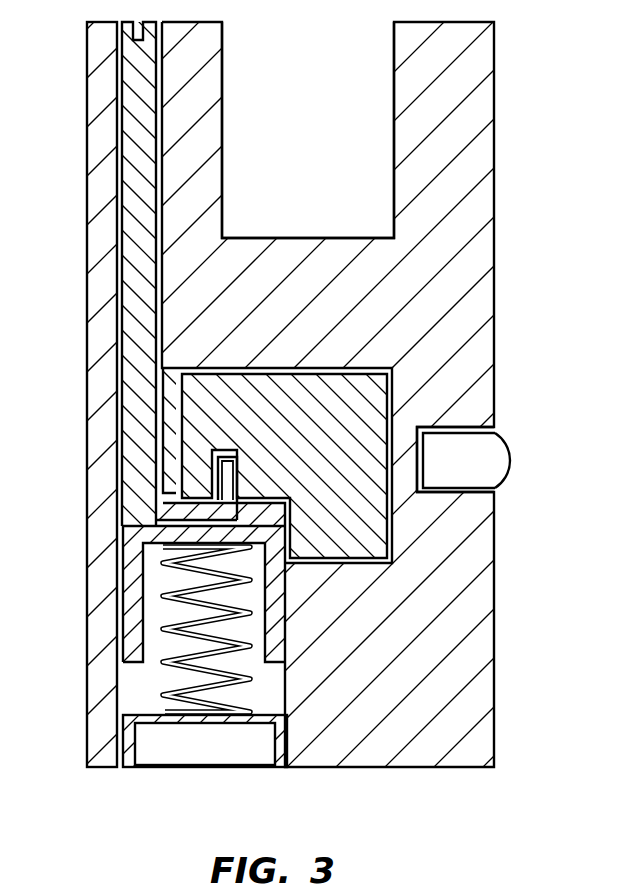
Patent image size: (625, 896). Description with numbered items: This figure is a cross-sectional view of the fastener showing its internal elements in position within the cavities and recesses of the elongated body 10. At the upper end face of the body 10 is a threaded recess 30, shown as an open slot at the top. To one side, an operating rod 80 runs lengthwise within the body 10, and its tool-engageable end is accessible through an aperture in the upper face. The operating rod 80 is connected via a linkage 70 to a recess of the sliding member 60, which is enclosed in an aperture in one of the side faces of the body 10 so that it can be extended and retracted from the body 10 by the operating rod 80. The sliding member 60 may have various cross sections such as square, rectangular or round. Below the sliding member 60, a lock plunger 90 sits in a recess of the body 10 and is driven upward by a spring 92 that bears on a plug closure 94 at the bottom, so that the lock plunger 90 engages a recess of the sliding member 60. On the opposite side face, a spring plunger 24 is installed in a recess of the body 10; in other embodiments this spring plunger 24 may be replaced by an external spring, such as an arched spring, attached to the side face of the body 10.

The elongated body 10 is at (480, 257).
The threaded recess 30 is at (317, 98).
The sliding member 60 is at (300, 398).
The linkage 70 is at (230, 472).
The operating rod 80 is at (140, 393).
The lock plunger 90 is at (133, 592).
The spring 92 is at (163, 690).
The plug closure 94 is at (200, 720).
The spring plunger 24 is at (485, 462).